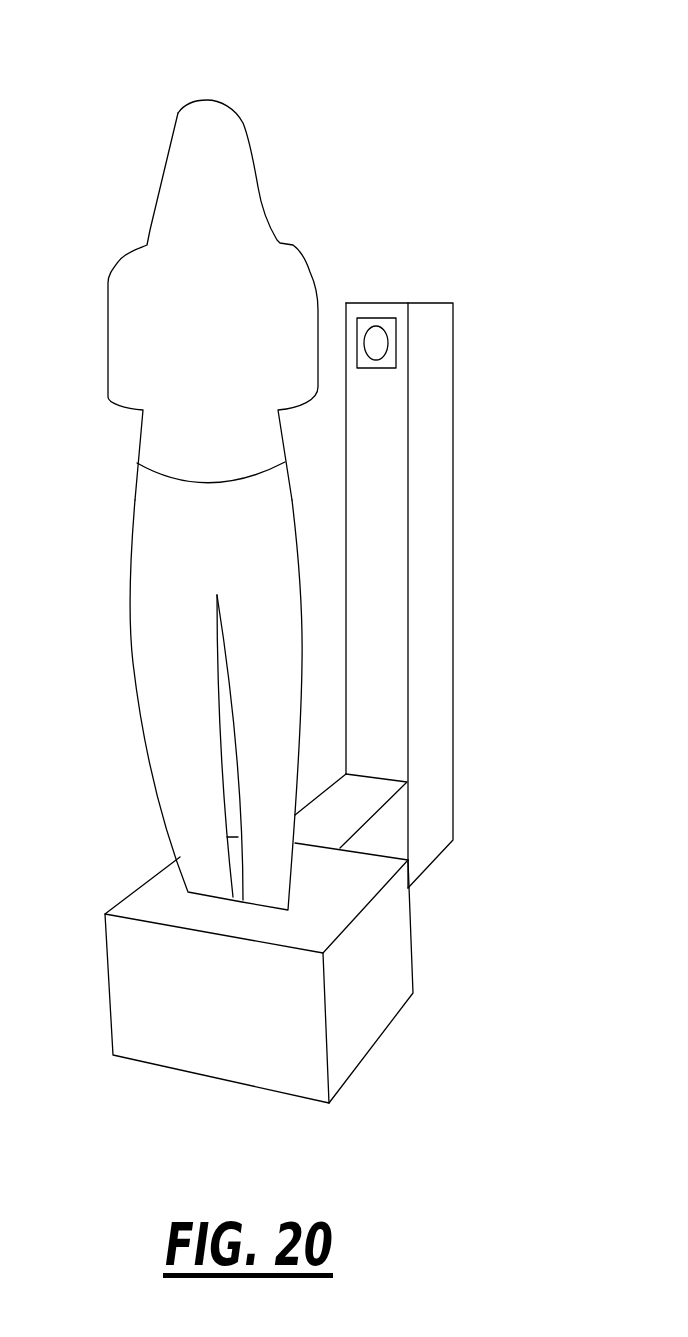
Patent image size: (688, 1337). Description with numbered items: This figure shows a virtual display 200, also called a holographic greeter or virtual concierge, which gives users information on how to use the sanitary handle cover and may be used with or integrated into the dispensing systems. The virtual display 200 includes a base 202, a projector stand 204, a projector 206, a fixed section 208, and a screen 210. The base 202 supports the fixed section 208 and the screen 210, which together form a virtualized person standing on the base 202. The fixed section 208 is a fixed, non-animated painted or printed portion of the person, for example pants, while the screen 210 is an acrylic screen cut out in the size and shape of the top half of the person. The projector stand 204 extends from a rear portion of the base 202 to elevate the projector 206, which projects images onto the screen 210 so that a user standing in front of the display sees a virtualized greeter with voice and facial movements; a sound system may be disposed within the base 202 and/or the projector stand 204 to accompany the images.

The virtual display 200 is at (310, 62).
The base 202 is at (390, 987).
The projector stand 204 is at (448, 495).
The projector 206 is at (378, 320).
The fixed section 208 is at (132, 577).
The screen 210 is at (108, 340).